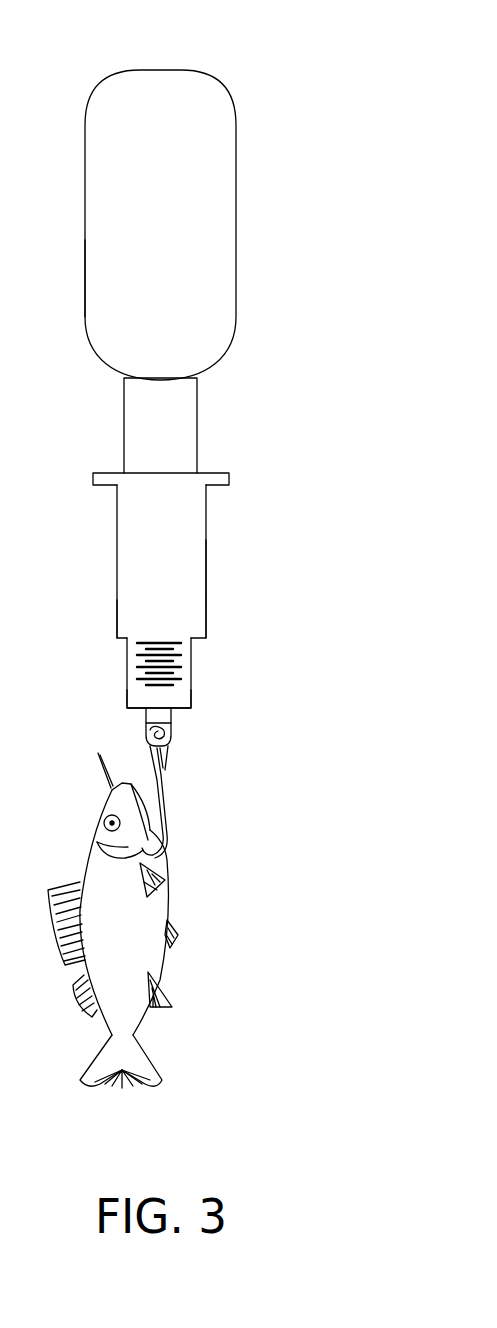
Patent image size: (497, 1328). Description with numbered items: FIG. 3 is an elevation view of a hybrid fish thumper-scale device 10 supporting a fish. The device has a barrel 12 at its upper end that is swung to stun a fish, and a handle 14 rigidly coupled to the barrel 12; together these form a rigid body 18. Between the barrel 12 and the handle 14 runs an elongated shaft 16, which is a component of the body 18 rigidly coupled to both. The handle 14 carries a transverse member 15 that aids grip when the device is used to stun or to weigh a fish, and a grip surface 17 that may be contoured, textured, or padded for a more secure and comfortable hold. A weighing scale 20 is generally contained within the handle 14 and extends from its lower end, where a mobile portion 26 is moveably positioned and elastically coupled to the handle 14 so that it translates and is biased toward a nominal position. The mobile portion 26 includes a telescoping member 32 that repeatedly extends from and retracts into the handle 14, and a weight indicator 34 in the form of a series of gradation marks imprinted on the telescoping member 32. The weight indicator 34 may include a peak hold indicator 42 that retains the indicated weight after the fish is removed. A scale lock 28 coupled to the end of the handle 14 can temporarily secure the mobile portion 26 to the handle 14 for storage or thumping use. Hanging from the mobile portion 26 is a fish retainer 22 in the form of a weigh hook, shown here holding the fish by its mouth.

The hybrid fish thumper-scale device 10 is at (232, 40).
The barrel 12 is at (85, 187).
The body 18 is at (82, 296).
The shaft 16 is at (124, 429).
The transverse member 15 is at (229, 479).
The handle 14 is at (115, 558).
The grip surface 17 is at (207, 567).
The peak hold indicator 42 is at (113, 646).
The scale lock 28 is at (207, 646).
The mobile portion 26 is at (127, 668).
The telescoping member 32 is at (127, 693).
The weight indicator 34 is at (176, 681).
The weighing scale 20 is at (182, 718).
The fish retainer 22 is at (168, 828).